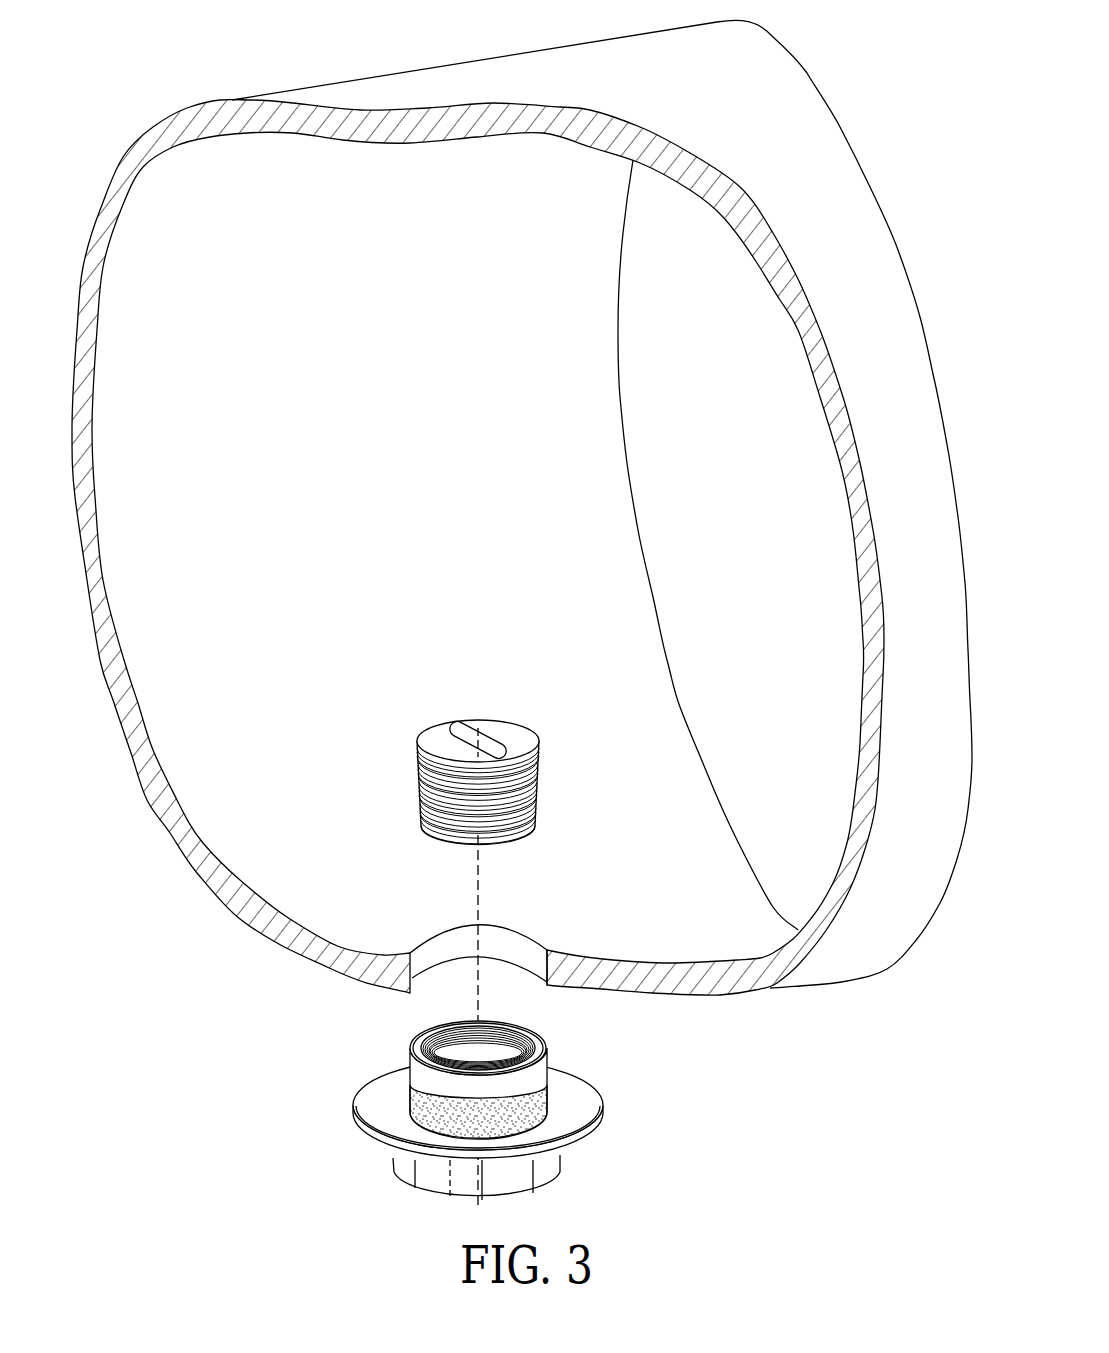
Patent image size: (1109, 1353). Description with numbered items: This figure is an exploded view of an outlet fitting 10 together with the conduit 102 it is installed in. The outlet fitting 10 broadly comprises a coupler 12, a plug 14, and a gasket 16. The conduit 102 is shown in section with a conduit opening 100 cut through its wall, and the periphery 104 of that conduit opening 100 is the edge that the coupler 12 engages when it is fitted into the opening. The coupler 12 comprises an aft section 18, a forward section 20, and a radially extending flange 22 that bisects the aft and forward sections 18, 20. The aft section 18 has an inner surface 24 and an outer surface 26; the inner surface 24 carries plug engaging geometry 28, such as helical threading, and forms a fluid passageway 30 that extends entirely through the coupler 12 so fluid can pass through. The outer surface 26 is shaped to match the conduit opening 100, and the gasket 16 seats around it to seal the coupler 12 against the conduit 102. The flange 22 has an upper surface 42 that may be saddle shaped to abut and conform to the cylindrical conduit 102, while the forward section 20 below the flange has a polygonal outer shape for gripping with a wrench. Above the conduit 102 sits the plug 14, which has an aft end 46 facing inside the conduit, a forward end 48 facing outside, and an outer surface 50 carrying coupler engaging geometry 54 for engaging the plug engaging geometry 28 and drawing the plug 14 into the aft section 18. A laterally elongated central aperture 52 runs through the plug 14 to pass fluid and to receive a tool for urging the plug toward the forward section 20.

The outlet fitting 10 is at (464, 1084).
The coupler 12 is at (477, 1084).
The plug 14 is at (470, 747).
The gasket 16 is at (418, 1100).
The aft section 18 is at (555, 1040).
The forward section 20 is at (612, 1162).
The radially extending flange 22 is at (535, 1109).
The inner surface 24 is at (440, 1035).
The outer surface 26 is at (553, 1062).
The plug engaging geometry 28 is at (513, 1019).
The fluid passageway 30 is at (493, 1012).
The upper surface 42 is at (588, 1105).
The aft end 46 is at (537, 722).
The forward end 48 is at (494, 796).
The outer surface 50 is at (553, 753).
The central aperture 52 is at (460, 722).
The coupler engaging geometry 54 is at (437, 788).
The conduit opening 100 is at (457, 948).
The conduit 102 is at (183, 870).
The periphery 104 is at (533, 933).